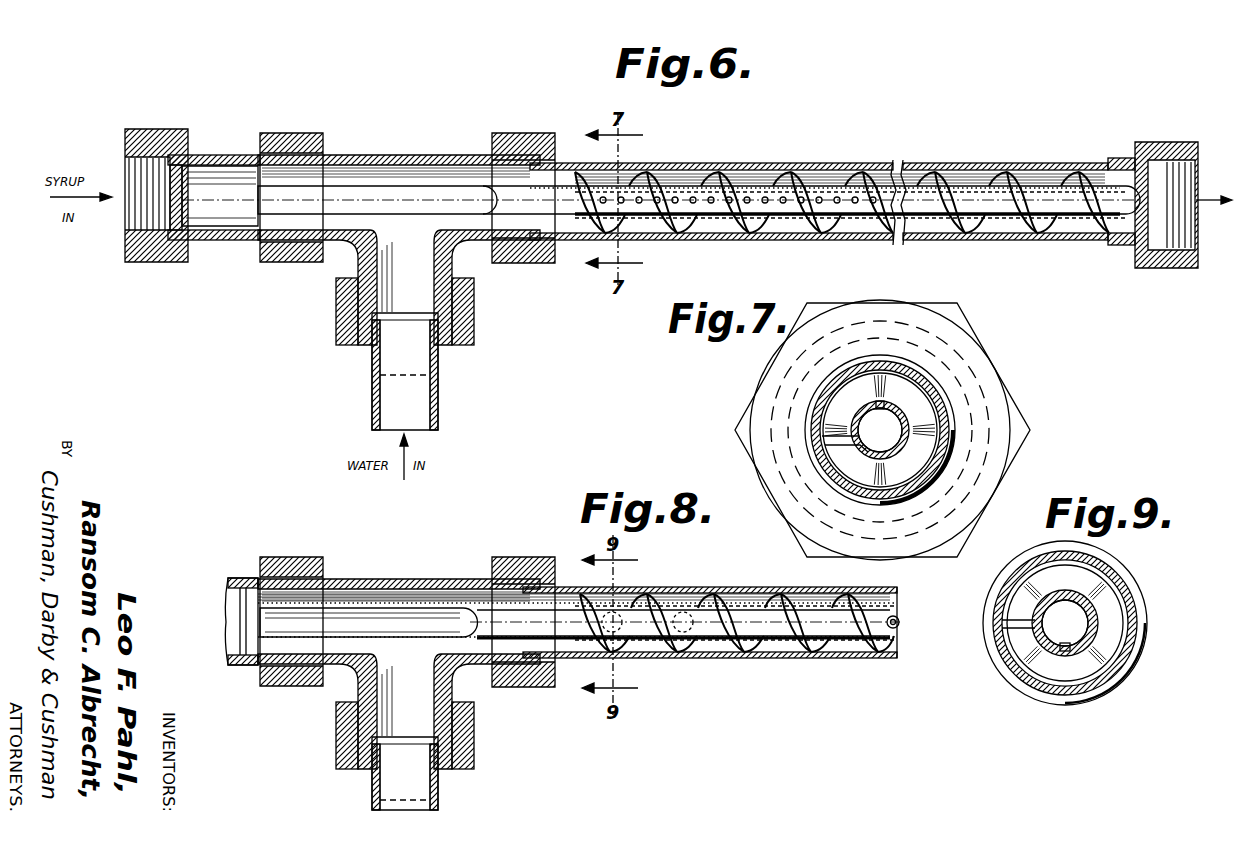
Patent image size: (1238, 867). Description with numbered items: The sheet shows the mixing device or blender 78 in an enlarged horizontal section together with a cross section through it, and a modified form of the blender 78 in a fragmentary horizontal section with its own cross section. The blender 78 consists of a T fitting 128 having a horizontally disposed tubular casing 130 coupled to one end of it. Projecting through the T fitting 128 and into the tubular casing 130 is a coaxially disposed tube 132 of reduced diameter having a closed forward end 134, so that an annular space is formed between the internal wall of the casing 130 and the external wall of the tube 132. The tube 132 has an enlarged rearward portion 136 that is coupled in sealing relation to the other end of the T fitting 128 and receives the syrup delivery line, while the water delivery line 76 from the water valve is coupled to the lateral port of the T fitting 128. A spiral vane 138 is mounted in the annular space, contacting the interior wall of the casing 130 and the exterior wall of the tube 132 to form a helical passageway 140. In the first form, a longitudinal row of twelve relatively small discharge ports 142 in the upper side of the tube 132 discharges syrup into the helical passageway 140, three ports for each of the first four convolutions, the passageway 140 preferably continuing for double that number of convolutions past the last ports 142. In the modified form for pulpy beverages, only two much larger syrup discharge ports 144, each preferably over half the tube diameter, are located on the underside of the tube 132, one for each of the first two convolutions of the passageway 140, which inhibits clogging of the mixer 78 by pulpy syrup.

In FIG. 6, the delivery line 76 is at (442, 404).
In FIG. 8, the delivery line 76 is at (443, 804).
In FIG. 6, the mixing device or blender 78 is at (782, 160).
In FIG. 8, the mixing device or blender 78 is at (678, 580).
In FIG. 6, the T fitting 128 is at (398, 153).
In FIG. 8, the T fitting 128 is at (437, 545).
In FIG. 6, the tubular casing 130 is at (920, 167).
In FIG. 7, the tubular casing 130 is at (925, 372).
In FIG. 8, the tubular casing 130 is at (722, 658).
In FIG. 9, the tubular casing 130 is at (1008, 655).
In FIG. 6, the tube 132 is at (748, 229).
In FIG. 7, the tube 132 is at (932, 432).
In FIG. 8, the tube 132 is at (788, 648).
In FIG. 9, the tube 132 is at (1083, 597).
In FIG. 6, the closed forward end 134 is at (1140, 243).
In FIG. 6, the enlarged rearward portion 136 is at (232, 156).
In FIG. 8, the enlarged rearward portion 136 is at (233, 576).
In FIG. 6, the spiral vane 138 is at (720, 177).
In FIG. 7, the spiral vane 138 is at (815, 418).
In FIG. 8, the spiral vane 138 is at (724, 600).
In FIG. 9, the spiral vane 138 is at (1017, 630).
In FIG. 6, the helical passageway 140 is at (792, 223).
In FIG. 7, the helical passageway 140 is at (932, 440).
In FIG. 8, the helical passageway 140 is at (853, 643).
In FIG. 9, the helical passageway 140 is at (1110, 625).
In FIG. 6, the discharge ports 142 is at (640, 203).
In FIG. 7, the discharge ports 142 is at (884, 404).
In FIG. 8, the syrup discharge ports 144 is at (646, 640).
In FIG. 9, the syrup discharge ports 144 is at (1070, 656).